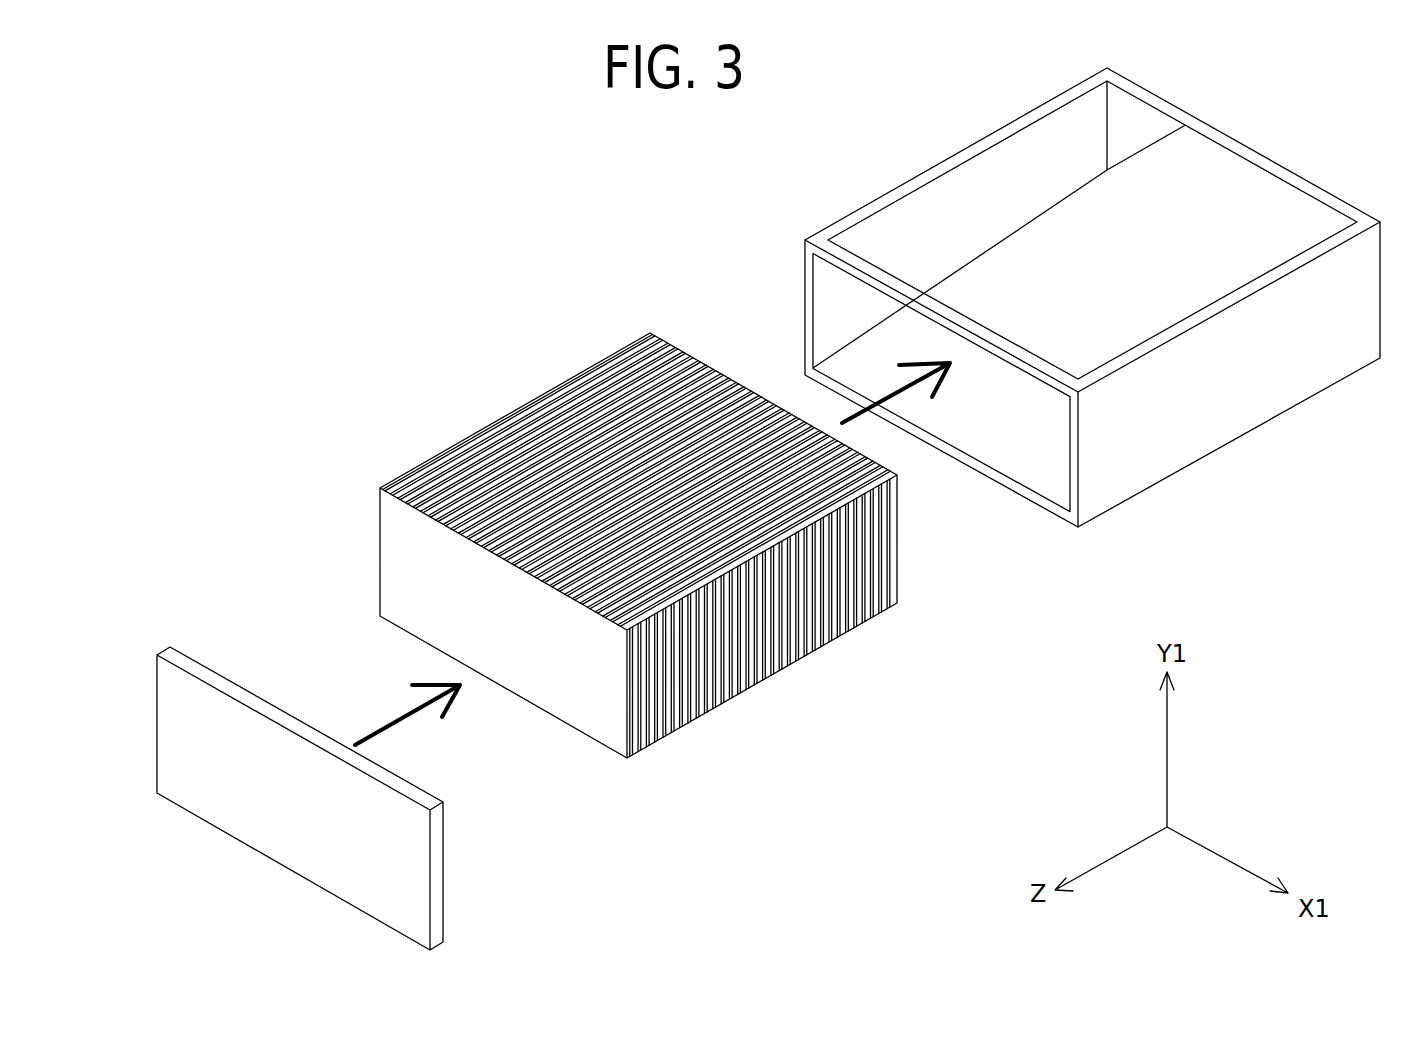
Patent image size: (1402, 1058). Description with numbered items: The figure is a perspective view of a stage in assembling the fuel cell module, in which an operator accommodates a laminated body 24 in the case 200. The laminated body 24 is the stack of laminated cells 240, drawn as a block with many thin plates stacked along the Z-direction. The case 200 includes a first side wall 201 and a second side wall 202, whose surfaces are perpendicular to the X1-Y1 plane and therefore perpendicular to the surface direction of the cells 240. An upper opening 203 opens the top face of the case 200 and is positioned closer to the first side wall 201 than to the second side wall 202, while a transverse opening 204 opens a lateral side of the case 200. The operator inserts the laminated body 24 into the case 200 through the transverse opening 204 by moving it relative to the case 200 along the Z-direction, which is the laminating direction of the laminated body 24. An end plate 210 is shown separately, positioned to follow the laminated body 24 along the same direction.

The case 200 is at (1092, 303).
The first side wall 201 is at (960, 205).
The second side wall 202 is at (1188, 410).
The upper opening 203 is at (1045, 194).
The transverse opening 204 is at (1002, 417).
The laminated body 24 is at (642, 547).
The cell 240 is at (577, 380).
The end plate 210 is at (252, 818).